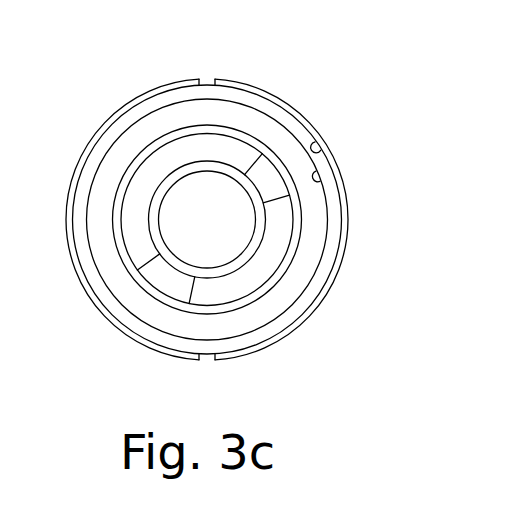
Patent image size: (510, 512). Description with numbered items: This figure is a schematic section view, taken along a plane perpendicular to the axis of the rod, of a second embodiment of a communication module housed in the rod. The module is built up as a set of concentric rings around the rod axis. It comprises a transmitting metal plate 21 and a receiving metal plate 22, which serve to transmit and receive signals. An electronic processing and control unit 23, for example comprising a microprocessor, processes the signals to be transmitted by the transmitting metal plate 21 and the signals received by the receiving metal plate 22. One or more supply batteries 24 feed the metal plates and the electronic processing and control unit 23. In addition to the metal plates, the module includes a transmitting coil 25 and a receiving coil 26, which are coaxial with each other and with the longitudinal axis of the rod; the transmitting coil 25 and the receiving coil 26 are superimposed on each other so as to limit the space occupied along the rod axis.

The transmitting metal plate 21 is at (134, 100).
The receiving metal plate 22 is at (289, 104).
The electronic processing and control unit 23 is at (218, 143).
The supply battery 24 is at (263, 270).
The transmitting coil 25 is at (322, 183).
The receiving coil 26 is at (322, 147).